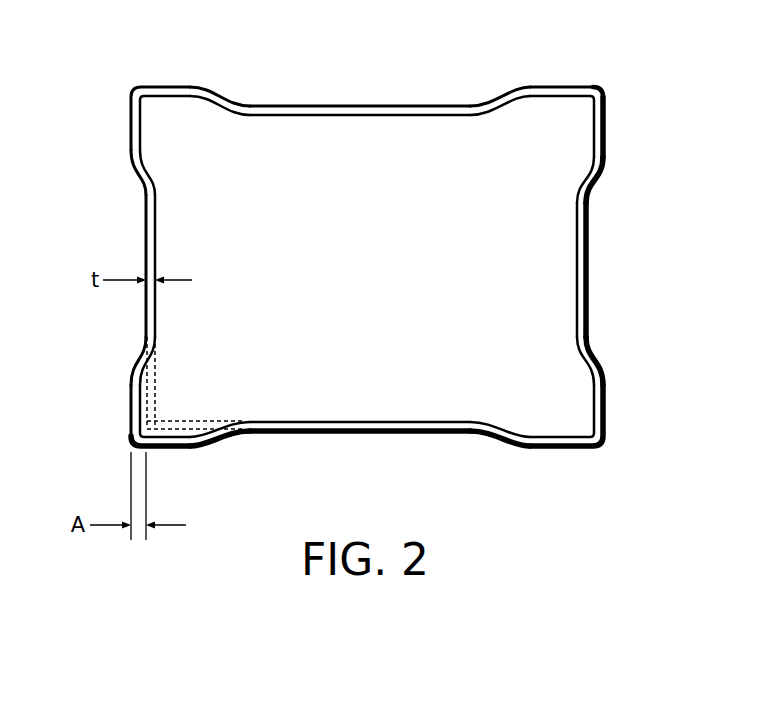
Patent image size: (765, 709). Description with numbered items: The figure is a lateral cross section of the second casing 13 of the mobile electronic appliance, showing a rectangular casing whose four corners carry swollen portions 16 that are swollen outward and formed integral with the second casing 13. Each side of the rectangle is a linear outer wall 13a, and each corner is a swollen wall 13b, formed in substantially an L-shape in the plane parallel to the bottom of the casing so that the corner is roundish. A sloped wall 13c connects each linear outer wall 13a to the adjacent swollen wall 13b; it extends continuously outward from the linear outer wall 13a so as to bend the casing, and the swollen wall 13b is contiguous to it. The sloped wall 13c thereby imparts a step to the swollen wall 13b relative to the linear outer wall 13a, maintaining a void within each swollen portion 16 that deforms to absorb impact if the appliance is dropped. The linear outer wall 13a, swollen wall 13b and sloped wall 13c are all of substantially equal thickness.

The second casing 13 is at (360, 266).
The linear outer wall 13a is at (332, 105).
The swollen wall 13b is at (361, 266).
The sloped wall 13c is at (228, 92).
The swollen portion 16 is at (597, 86).